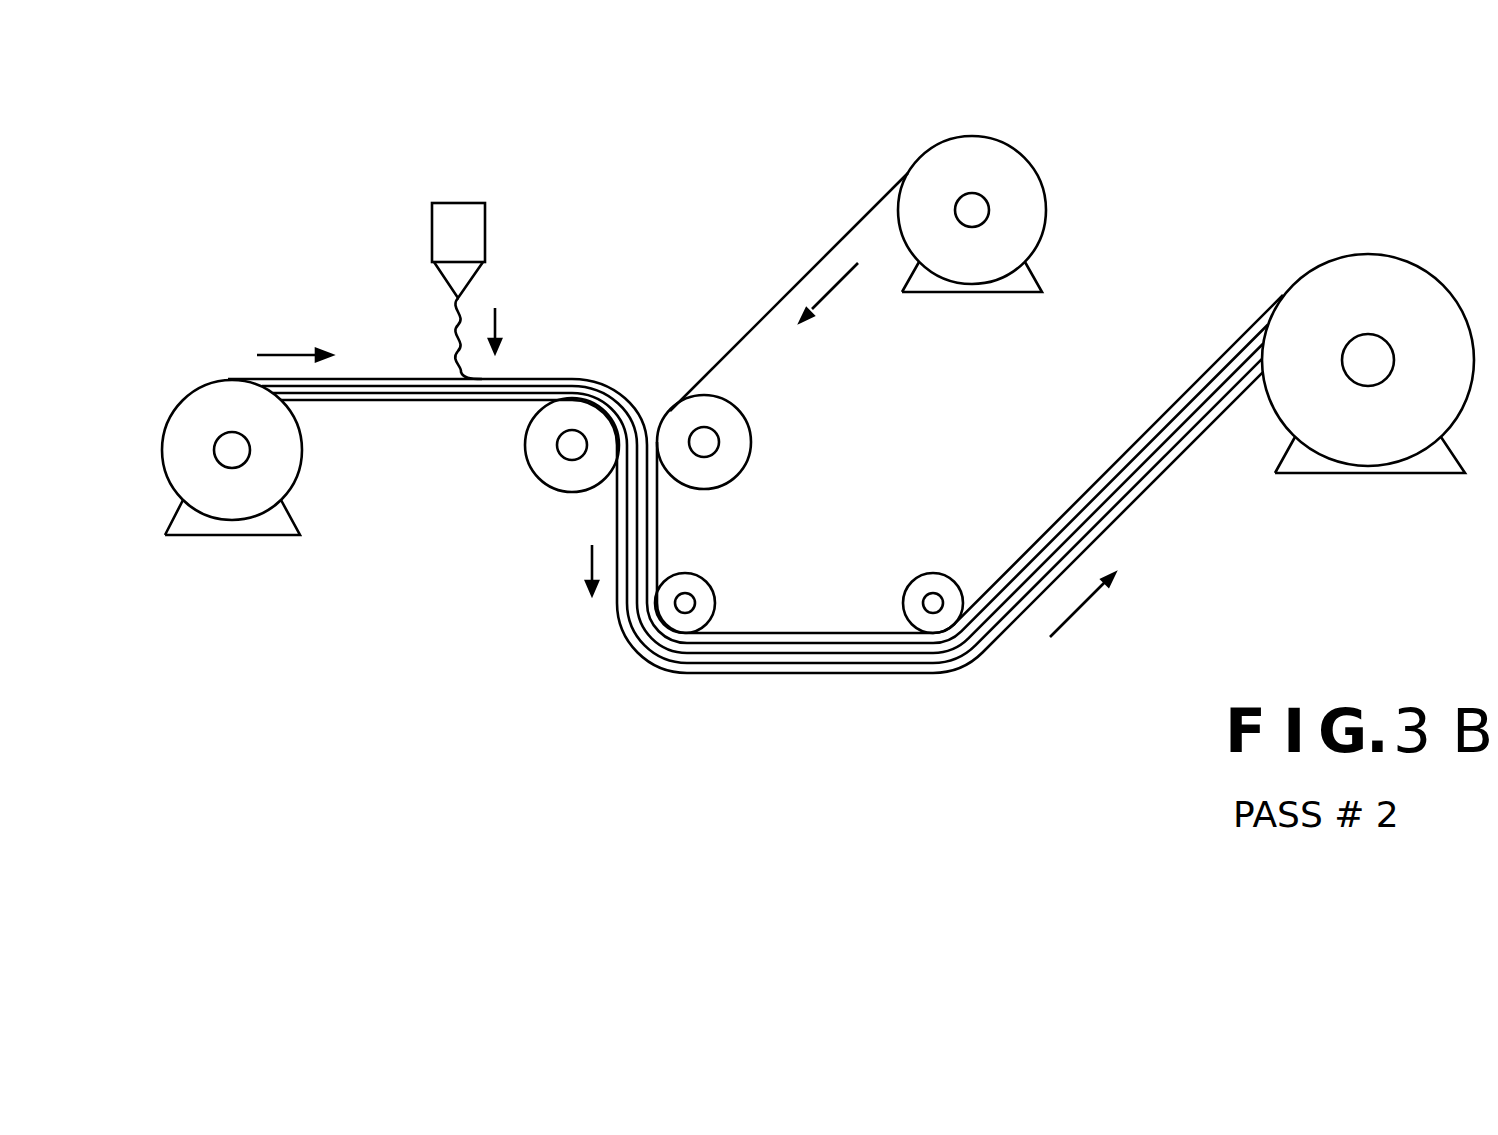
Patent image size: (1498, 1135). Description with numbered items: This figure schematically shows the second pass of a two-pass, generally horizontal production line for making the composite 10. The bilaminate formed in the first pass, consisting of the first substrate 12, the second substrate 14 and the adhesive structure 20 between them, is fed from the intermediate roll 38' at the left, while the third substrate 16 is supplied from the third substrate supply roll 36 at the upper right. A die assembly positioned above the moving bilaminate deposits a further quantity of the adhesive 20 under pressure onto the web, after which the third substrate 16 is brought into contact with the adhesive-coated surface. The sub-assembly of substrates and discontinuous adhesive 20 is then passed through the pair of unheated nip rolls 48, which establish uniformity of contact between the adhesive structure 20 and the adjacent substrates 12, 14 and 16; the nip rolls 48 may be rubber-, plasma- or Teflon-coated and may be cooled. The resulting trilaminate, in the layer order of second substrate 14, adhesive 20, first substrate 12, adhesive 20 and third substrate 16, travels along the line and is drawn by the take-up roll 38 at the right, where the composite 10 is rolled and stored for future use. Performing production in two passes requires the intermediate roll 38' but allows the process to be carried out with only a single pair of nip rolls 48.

The composite 10 is at (755, 495).
The first substrate 12 is at (365, 379).
The second substrate 14 is at (437, 400).
The third substrate 16 is at (826, 250).
The adhesive structure 20 is at (538, 379).
The third substrate supply roll 36 is at (1035, 173).
The take-up roll 38 is at (1369, 341).
The intermediate roll 38' is at (232, 411).
The nip rolls 48 is at (566, 492).